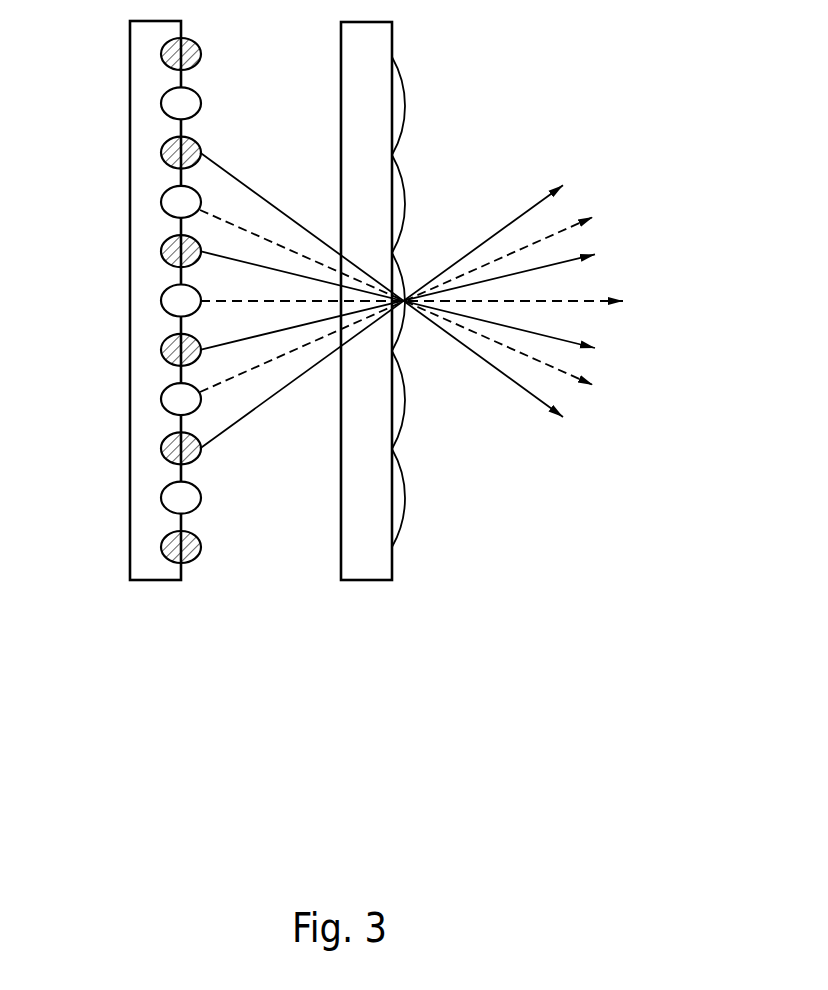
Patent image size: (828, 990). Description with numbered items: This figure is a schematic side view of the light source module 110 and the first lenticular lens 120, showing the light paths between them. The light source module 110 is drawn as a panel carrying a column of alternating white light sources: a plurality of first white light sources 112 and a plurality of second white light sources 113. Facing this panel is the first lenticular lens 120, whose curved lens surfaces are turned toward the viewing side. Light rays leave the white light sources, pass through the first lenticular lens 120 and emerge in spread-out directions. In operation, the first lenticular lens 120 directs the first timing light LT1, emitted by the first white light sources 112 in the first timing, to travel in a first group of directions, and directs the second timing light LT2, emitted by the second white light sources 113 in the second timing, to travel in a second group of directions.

The light source module 110 is at (157, 573).
The first white light sources 112 is at (162, 302).
The second white light sources 113 is at (162, 253).
The first lenticular lens 120 is at (365, 573).
The first timing light LT1 is at (575, 301).
The second timing light LT2 is at (562, 340).